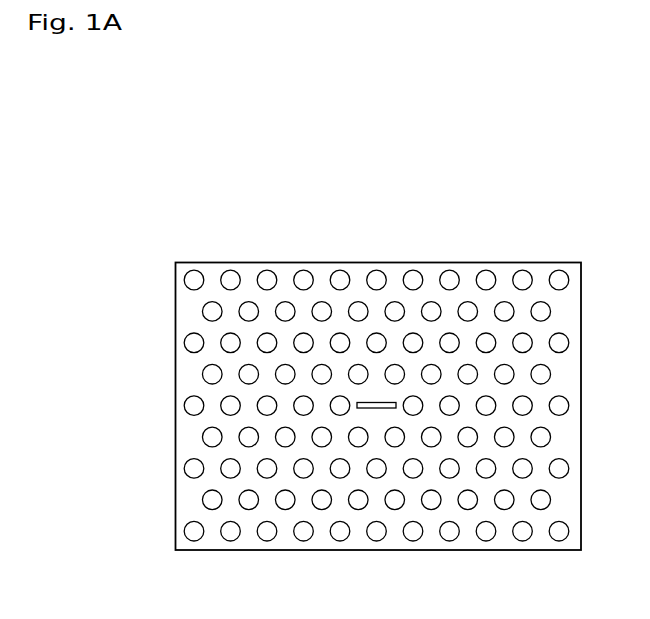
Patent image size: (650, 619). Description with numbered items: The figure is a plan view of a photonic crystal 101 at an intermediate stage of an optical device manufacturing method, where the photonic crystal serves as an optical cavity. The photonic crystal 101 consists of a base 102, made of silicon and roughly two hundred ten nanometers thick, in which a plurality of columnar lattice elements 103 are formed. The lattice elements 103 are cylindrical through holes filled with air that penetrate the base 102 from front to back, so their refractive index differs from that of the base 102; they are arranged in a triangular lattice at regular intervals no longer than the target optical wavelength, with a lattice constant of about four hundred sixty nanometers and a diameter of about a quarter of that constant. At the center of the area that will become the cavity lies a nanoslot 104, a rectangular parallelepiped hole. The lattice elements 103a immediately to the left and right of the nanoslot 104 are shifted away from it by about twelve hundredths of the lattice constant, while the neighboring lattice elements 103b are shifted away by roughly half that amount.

The photonic crystal 101 is at (590, 405).
The base 102 is at (581, 452).
The columnar lattice elements 103 is at (562, 540).
The lattice elements 103a is at (304, 415).
The lattice elements 103b is at (267, 415).
The nanoslot 104 is at (376, 408).